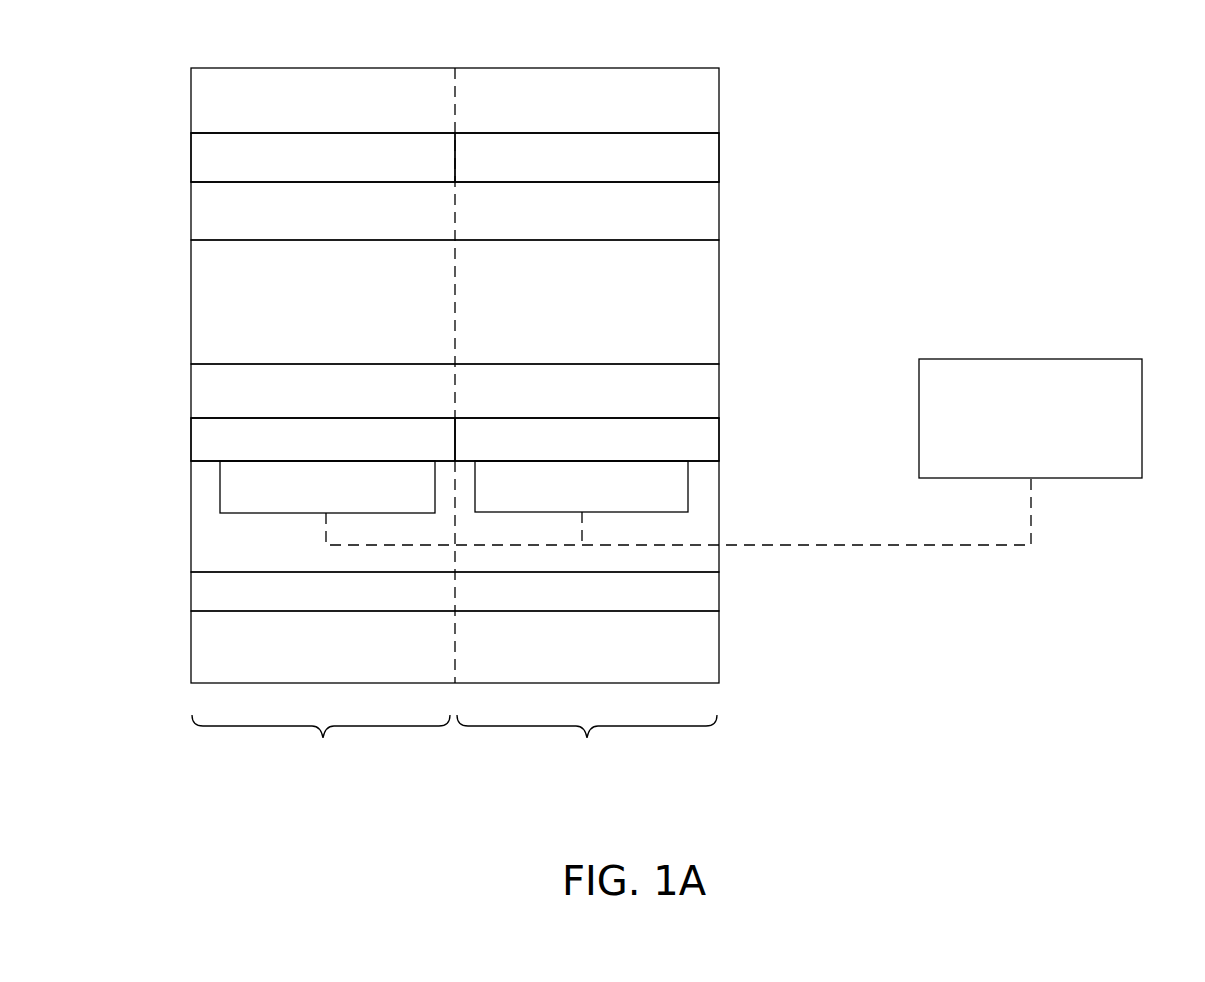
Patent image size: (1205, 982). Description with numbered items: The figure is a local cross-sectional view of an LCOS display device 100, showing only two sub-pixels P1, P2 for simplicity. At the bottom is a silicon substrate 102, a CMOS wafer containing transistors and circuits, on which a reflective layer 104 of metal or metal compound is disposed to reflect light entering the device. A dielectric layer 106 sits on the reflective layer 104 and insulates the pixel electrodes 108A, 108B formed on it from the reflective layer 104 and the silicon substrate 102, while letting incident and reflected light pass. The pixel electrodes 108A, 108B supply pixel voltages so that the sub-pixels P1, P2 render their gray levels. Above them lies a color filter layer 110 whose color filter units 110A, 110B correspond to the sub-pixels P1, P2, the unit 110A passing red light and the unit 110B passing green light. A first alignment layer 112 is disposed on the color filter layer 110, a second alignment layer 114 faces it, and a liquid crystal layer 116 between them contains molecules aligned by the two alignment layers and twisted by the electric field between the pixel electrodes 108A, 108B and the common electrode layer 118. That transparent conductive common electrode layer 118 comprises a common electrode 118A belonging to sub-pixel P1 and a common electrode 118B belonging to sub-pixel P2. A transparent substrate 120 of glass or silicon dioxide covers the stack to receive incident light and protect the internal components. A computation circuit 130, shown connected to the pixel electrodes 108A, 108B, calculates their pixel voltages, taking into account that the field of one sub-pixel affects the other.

The LCOS display device 100 is at (35, 53).
The silicon substrate 102 is at (720, 647).
The reflective layer 104 is at (720, 589).
The dielectric layer 106 is at (720, 515).
The pixel electrode 108A is at (294, 501).
The pixel electrode 108B is at (549, 501).
The color filter layer 110 is at (720, 440).
The color filter unit 110A is at (353, 454).
The color filter unit 110B is at (619, 454).
The first alignment layer 112 is at (720, 393).
The second alignment layer 114 is at (720, 212).
The liquid crystal layer 116 is at (720, 305).
The common electrode layer 118 is at (720, 158).
The common electrode 118A is at (353, 168).
The common electrode 118B is at (619, 168).
The transparent substrate 120 is at (720, 102).
The computation circuit 130 is at (1030, 359).
The sub-pixel P1 is at (321, 747).
The sub-pixel P2 is at (587, 747).